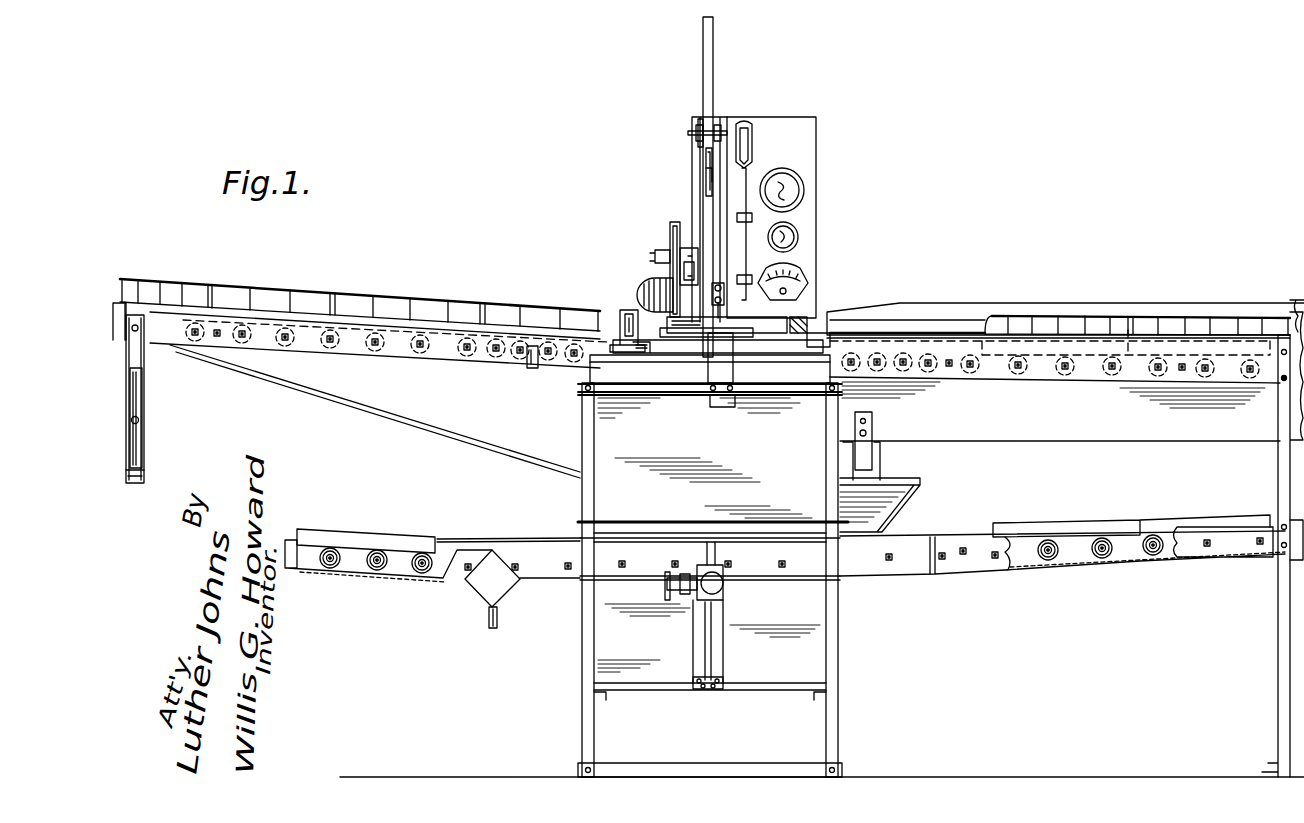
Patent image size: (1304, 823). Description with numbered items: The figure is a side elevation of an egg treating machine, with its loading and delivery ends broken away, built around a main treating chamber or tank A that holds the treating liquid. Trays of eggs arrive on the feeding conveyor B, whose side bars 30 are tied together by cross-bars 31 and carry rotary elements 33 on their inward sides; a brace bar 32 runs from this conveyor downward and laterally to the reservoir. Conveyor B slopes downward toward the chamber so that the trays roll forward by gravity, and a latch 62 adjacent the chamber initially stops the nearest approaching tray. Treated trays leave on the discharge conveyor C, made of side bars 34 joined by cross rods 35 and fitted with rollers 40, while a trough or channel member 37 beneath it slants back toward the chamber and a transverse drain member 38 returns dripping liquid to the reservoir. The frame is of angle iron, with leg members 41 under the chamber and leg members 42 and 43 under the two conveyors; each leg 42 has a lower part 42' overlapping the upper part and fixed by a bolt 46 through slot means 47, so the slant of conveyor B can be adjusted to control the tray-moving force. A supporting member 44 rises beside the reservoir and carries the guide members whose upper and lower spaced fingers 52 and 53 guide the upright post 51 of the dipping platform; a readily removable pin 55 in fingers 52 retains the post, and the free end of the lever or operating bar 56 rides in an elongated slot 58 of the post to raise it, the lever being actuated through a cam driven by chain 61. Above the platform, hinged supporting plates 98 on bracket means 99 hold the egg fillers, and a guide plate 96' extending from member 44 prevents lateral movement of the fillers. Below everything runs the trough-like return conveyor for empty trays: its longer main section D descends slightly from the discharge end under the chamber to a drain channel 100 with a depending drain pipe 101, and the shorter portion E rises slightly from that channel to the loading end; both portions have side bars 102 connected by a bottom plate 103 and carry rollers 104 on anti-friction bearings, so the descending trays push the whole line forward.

The side bars 30 is at (402, 350).
The cross-bars 31 is at (530, 366).
The brace bar 32 is at (482, 440).
The rotary elements 33 is at (336, 350).
The side bars 34 is at (1035, 370).
The cross rods 35 is at (947, 360).
The trough or channel member 37 is at (1103, 441).
The drain member 38 is at (872, 458).
The rollers 40 is at (978, 376).
The leg members 41 is at (830, 732).
The leg members 42 is at (154, 393).
The lower part 42' is at (161, 462).
The leg members 43 is at (1282, 640).
The supporting member 44 is at (697, 203).
The bolt 46 is at (139, 420).
The slot means 47 is at (140, 388).
The upright bar or post 51 is at (703, 79).
The upper spaced fingers 52 is at (718, 125).
The lower spaced fingers 53 is at (736, 300).
The removable pin 55 is at (698, 131).
The lever or operating bar 56 is at (706, 154).
The elongated slot 58 is at (706, 172).
The chain 61 is at (676, 238).
The latch 62 is at (625, 314).
The guide plate 96' is at (637, 281).
The supporting members or plates 98 is at (800, 334).
The bracket means 99 is at (717, 352).
The drain channel 100 is at (488, 587).
The drain pipe 101 is at (490, 618).
The side bars 102 is at (290, 552).
The bottom plate 103 is at (345, 572).
The rollers 104 is at (420, 570).
The main treating chamber or tank A is at (673, 580).
The feeding conveyor B is at (462, 368).
The discharge conveyor C is at (1055, 395).
The main section of return conveyor D is at (1028, 570).
The return conveyor portion E is at (388, 580).